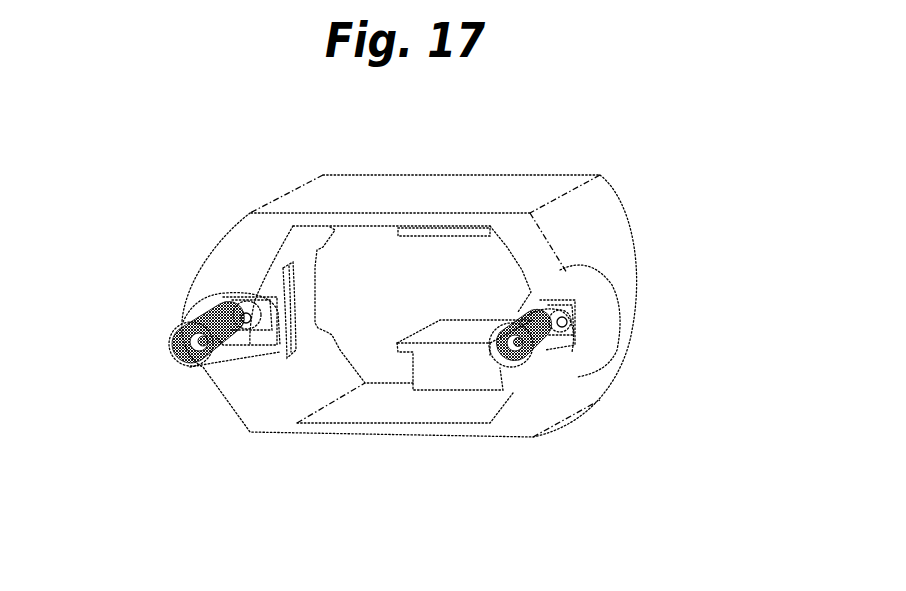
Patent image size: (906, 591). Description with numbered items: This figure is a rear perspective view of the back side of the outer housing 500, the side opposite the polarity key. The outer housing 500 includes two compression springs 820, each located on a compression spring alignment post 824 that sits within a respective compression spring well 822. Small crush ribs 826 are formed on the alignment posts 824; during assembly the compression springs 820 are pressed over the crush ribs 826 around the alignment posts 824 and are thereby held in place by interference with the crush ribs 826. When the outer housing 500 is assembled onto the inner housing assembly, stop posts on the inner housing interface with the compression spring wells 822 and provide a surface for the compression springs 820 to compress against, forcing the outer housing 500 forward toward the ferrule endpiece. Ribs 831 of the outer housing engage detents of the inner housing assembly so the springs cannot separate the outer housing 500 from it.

The outer housing 500 is at (567, 185).
The ribs 831 is at (288, 268).
The compression spring wells 822 is at (230, 304).
The compression springs 820 is at (202, 363).
The compression spring alignment posts 824 is at (247, 323).
The crush ribs 826 is at (257, 326).